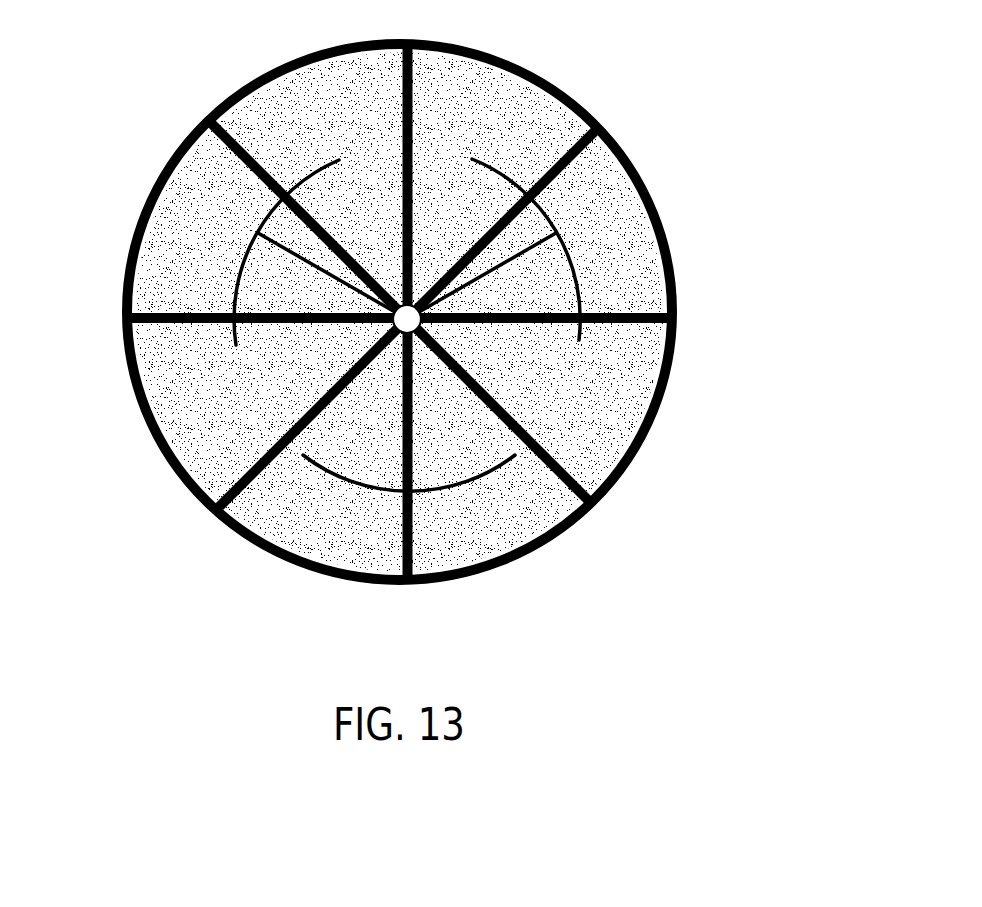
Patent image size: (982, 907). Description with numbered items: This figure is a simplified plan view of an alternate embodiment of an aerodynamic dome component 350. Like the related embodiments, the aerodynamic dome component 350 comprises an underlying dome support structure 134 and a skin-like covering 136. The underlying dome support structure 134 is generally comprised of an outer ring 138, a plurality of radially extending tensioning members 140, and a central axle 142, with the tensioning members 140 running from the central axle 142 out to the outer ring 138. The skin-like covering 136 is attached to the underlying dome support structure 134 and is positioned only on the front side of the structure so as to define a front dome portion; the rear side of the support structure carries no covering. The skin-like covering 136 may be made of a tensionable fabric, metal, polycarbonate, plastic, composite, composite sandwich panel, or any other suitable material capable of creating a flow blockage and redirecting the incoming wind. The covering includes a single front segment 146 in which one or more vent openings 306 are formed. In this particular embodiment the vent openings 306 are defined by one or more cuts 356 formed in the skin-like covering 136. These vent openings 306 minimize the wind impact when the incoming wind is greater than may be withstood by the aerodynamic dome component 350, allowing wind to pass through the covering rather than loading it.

The aerodynamic dome component 350 is at (693, 61).
The skin-like covering 136 is at (566, 95).
The single front segment 146 is at (371, 290).
The outer ring 138 is at (142, 413).
The underlying dome support structure 134 is at (162, 313).
The radially extending tensioning members 140 is at (217, 492).
The central axle 142 is at (426, 328).
The cuts 356 is at (258, 230).
The vent openings 306 is at (563, 247).